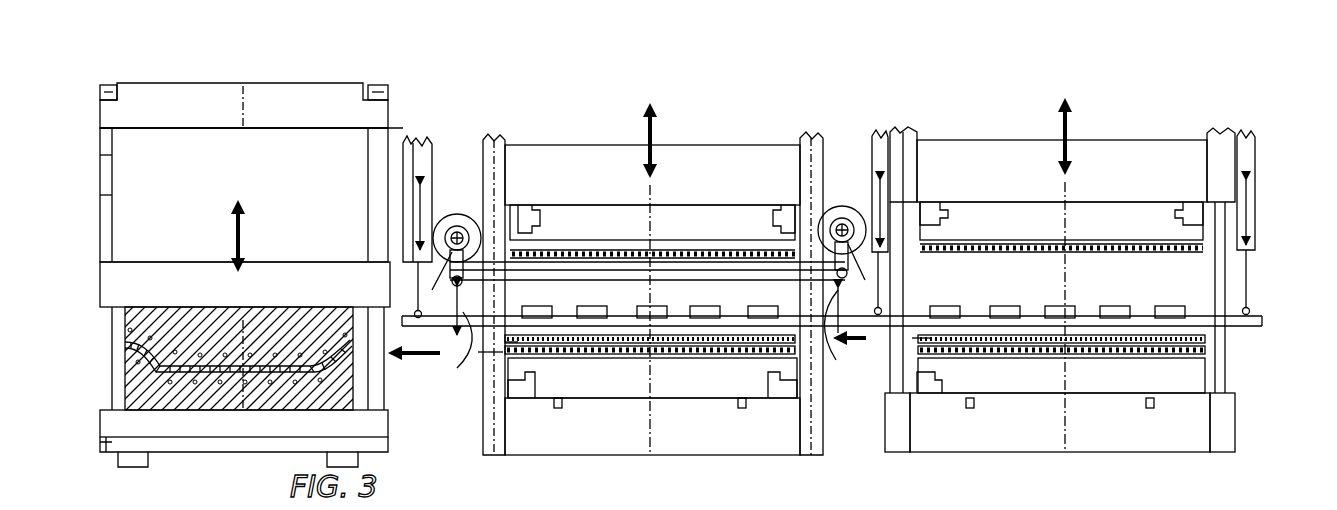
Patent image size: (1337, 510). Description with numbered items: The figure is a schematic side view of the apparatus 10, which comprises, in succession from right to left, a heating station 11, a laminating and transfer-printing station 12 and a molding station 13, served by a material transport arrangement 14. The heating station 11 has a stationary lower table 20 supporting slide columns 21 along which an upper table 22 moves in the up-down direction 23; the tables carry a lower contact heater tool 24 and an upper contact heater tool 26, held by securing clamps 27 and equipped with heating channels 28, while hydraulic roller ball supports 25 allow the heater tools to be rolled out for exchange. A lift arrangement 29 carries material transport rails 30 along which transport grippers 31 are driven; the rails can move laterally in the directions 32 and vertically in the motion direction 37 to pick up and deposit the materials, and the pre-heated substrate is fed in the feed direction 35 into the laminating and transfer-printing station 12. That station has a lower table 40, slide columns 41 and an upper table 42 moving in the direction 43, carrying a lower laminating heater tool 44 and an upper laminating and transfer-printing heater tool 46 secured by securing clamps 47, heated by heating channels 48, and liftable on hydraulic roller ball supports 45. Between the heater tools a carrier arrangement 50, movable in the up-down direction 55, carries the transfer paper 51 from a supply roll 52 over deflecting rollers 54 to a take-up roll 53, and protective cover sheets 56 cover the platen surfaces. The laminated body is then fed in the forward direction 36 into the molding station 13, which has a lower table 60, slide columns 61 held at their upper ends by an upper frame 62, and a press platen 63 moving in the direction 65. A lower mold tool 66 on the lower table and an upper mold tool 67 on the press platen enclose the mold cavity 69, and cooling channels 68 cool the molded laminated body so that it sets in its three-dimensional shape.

The apparatus 10 is at (1160, 98).
The heating station 11 is at (1044, 285).
The laminating and transfer-printing station 12 is at (656, 295).
The molding station 13 is at (261, 280).
The material transport arrangement 14 is at (866, 504).
The heating station lower table 20 is at (1038, 445).
The slide columns 21 is at (904, 138).
The heating station upper table 22 is at (1036, 183).
The vertical up-down motion arrow 23 is at (1074, 135).
The lower contact heater tool 24 is at (1043, 393).
The hydraulic roller ball supports 25 is at (969, 408).
The upper contact heater tool 26 is at (1033, 235).
The securing clamps 27 is at (927, 208).
The heating channels 28 is at (1183, 250).
The lift arrangement 29 is at (420, 158).
The material transport rails 30 is at (832, 321).
The transport grippers 31 is at (590, 313).
The lateral motion directions 32 is at (1262, 501).
The feed direction 35 is at (863, 345).
The forward feed direction 36 is at (419, 363).
The vertical motion direction 37 is at (422, 220).
The lower table 40 is at (616, 433).
The slide columns 41 is at (497, 177).
The upper table 42 is at (606, 190).
The motion direction 43 is at (655, 136).
The lower laminating heater tool 44 is at (611, 395).
The hydraulic roller ball supports 45 is at (558, 410).
The upper laminating and transfer-printing heater tool 46 is at (606, 238).
The securing clamps 47 is at (518, 216).
The heating channels 48 is at (727, 250).
The carrier arrangement 50 is at (576, 283).
The transfer paper 51 is at (750, 278).
The transfer paper supply roll 52 is at (858, 281).
The take-up roll 53 is at (444, 290).
The transfer paper deflecting rollers 54 is at (838, 280).
The up-down direction 55 is at (661, 335).
The protective cover sheets 56 is at (507, 232).
The lower table 60 is at (205, 435).
The slide columns 61 is at (108, 196).
The press machine upper frame 62 is at (392, 108).
The press platen 63 is at (148, 275).
The vertical motion direction 65 is at (241, 233).
The lower mold tool 66 is at (190, 393).
The upper mold tool 67 is at (208, 338).
The cooling channels 68 is at (325, 375).
The mold cavity 69 is at (333, 347).